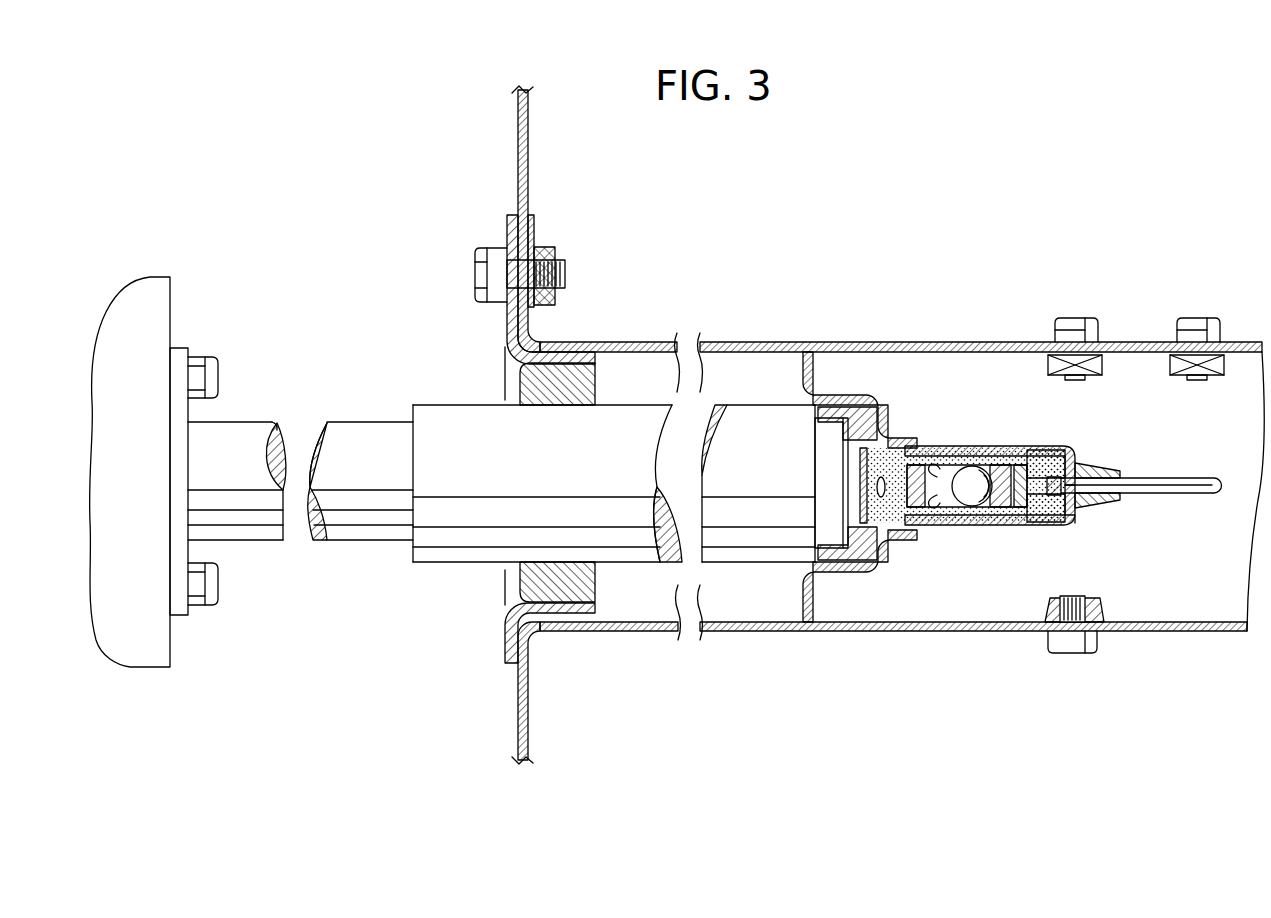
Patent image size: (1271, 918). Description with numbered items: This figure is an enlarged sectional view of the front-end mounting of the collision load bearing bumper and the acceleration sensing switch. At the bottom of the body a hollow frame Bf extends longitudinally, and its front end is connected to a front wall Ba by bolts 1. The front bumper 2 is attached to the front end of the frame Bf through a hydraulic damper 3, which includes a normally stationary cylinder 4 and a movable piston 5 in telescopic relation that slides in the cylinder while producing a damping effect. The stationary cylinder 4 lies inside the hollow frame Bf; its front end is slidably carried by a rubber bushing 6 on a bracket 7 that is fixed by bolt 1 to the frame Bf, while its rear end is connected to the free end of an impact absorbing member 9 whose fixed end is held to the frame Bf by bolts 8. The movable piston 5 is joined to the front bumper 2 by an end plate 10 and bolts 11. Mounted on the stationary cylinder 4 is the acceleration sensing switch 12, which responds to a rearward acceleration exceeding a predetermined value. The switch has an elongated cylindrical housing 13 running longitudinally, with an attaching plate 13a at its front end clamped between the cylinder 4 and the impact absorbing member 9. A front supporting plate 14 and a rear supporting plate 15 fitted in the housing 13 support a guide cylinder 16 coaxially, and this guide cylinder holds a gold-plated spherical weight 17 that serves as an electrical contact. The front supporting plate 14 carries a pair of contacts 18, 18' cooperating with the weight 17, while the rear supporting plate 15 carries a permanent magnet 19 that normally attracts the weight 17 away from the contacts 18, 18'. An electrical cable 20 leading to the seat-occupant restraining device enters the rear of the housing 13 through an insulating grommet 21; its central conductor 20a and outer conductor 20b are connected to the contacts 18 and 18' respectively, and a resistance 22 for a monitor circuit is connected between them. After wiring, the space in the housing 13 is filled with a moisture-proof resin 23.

The bolts 1 is at (485, 274).
The front bumper 2 is at (160, 302).
The hydraulic damper 3 is at (411, 399).
The stationary cylinder 4 is at (668, 410).
The movable piston 5 is at (335, 427).
The rubber bushing 6 is at (550, 392).
The bracket 7 is at (510, 325).
The bolts 8 is at (1077, 326).
The impact absorbing member 9 is at (806, 385).
The end plate 10 is at (184, 351).
The bolts 11 is at (206, 376).
The acceleration sensing switch 12 is at (995, 445).
The housing 13 is at (966, 447).
The attaching plate 13a is at (878, 414).
The front supporting plate 14 is at (888, 532).
The rear supporting plate 15 is at (1017, 506).
The guide cylinder 16 is at (955, 508).
The spherical weight 17 is at (973, 499).
The contact 18 is at (928, 526).
The contact 18' is at (949, 444).
The permanent magnet 19 is at (1005, 463).
The electrical cable 20 is at (1168, 479).
The central conductor 20a is at (1033, 517).
The outer conductor 20b is at (1045, 452).
The insulating grommet 21 is at (1082, 468).
The resistance 22 is at (876, 483).
The moisture-proof resin 23 is at (1071, 512).
The front wall Ba is at (519, 176).
The hollow frame Bf is at (687, 340).